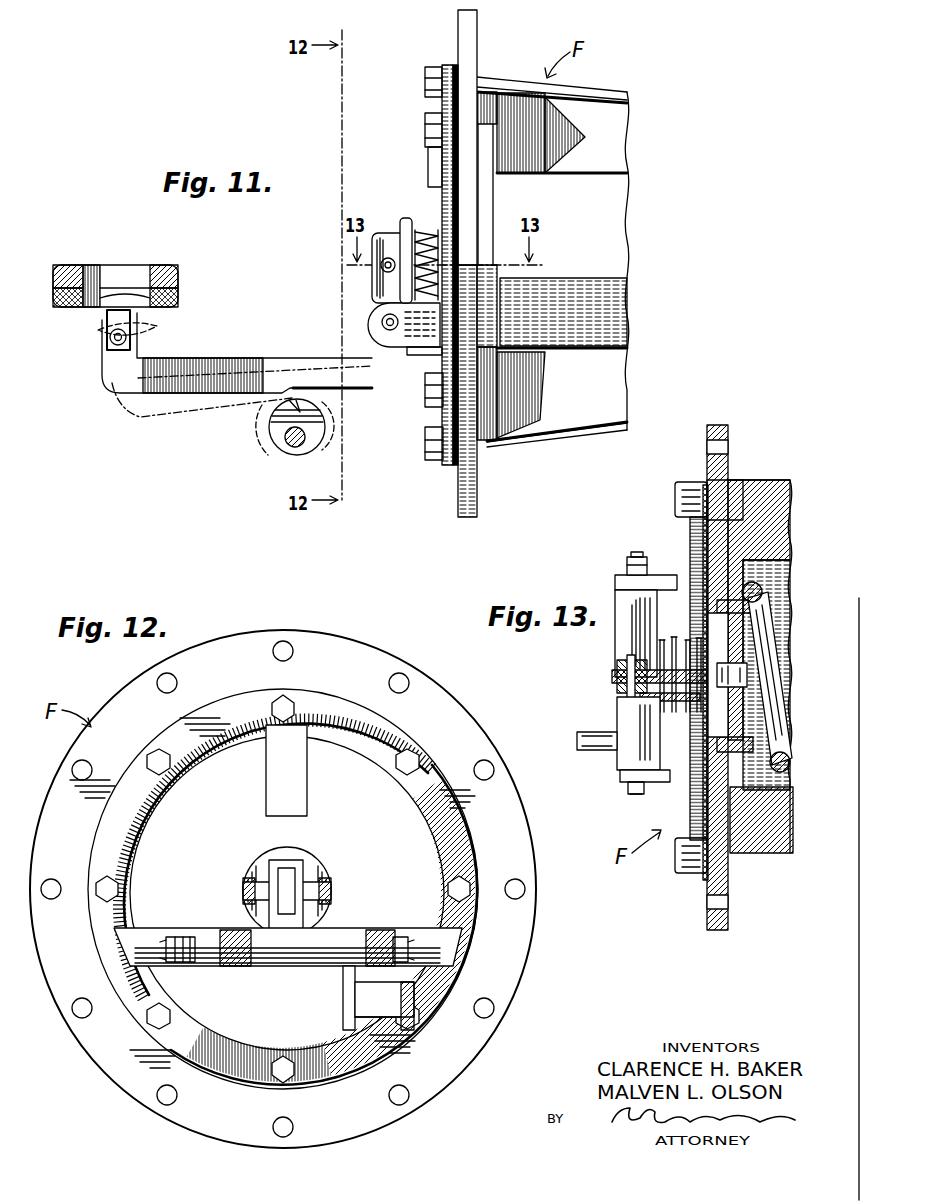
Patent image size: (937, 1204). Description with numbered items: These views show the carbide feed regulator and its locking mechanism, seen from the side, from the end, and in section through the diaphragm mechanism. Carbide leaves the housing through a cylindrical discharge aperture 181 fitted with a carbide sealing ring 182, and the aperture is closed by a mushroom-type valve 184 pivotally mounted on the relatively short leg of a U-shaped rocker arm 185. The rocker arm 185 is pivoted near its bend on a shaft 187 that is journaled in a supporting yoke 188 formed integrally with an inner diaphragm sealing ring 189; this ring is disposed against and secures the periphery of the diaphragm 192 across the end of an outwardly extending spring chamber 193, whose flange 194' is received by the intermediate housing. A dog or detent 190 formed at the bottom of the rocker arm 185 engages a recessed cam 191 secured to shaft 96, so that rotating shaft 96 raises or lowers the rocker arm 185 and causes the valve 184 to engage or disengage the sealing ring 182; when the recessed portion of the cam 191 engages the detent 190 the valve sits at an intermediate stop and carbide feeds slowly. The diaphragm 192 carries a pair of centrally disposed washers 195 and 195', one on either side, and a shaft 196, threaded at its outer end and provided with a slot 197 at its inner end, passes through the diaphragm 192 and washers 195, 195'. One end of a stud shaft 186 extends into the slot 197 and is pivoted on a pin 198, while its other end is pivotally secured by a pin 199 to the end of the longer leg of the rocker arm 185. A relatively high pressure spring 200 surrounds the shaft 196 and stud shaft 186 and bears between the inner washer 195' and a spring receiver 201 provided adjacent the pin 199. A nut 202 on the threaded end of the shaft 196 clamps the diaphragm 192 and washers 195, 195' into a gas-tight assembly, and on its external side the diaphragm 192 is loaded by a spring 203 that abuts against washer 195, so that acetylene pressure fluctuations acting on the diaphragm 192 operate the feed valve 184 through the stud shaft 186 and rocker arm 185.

In FIG. 11, the shaft 96 is at (290, 446).
In FIG. 11, the discharge aperture 181 is at (142, 275).
In FIG. 11, the carbide sealing ring 182 is at (178, 293).
In FIG. 11, the mushroom-type valve 184 is at (100, 320).
In FIG. 11, the U-shaped rocker arm 185 is at (274, 355).
In FIG. 12, the U-shaped rocker arm 185 is at (343, 1012).
In FIG. 13, the U-shaped rocker arm 185 is at (598, 742).
In FIG. 11, the stud shaft 186 is at (372, 262).
In FIG. 12, the stud shaft 186 is at (287, 868).
In FIG. 13, the stud shaft 186 is at (612, 677).
In FIG. 11, the shaft 187 is at (380, 322).
In FIG. 12, the shaft 187 is at (240, 950).
In FIG. 13, the shaft 187 is at (637, 556).
In FIG. 11, the supporting yoke 188 is at (420, 355).
In FIG. 11, the inner diaphragm sealing ring 189 is at (441, 416).
In FIG. 12, the inner diaphragm sealing ring 189 is at (232, 712).
In FIG. 13, the inner diaphragm sealing ring 189 is at (700, 488).
In FIG. 11, the detent 190 is at (275, 425).
In FIG. 11, the recessed cam 191 is at (262, 445).
In FIG. 11, the diaphragm 192 is at (455, 68).
In FIG. 12, the diaphragm 192 is at (395, 808).
In FIG. 13, the diaphragm 192 is at (693, 535).
In FIG. 13, the spring chamber 193 is at (758, 772).
In FIG. 11, the flange 194' is at (498, 263).
In FIG. 12, the flange 194' is at (283, 847).
In FIG. 13, the flange 194' is at (751, 677).
In FIG. 13, the washer 195 is at (717, 666).
In FIG. 13, the inner washer 195' is at (701, 704).
In FIG. 13, the shaft 196 is at (735, 690).
In FIG. 13, the slot 197 is at (712, 656).
In FIG. 13, the pin 198 is at (658, 702).
In FIG. 11, the pin 199 is at (380, 270).
In FIG. 12, the pin 199 is at (332, 887).
In FIG. 13, the pin 199 is at (628, 690).
In FIG. 11, the high pressure spring 200 is at (422, 234).
In FIG. 13, the high pressure spring 200 is at (660, 640).
In FIG. 11, the spring receiver 201 is at (405, 228).
In FIG. 12, the spring receiver 201 is at (320, 862).
In FIG. 13, the spring receiver 201 is at (660, 644).
In FIG. 13, the nut 202 is at (742, 672).
In FIG. 13, the spring 203 is at (779, 775).